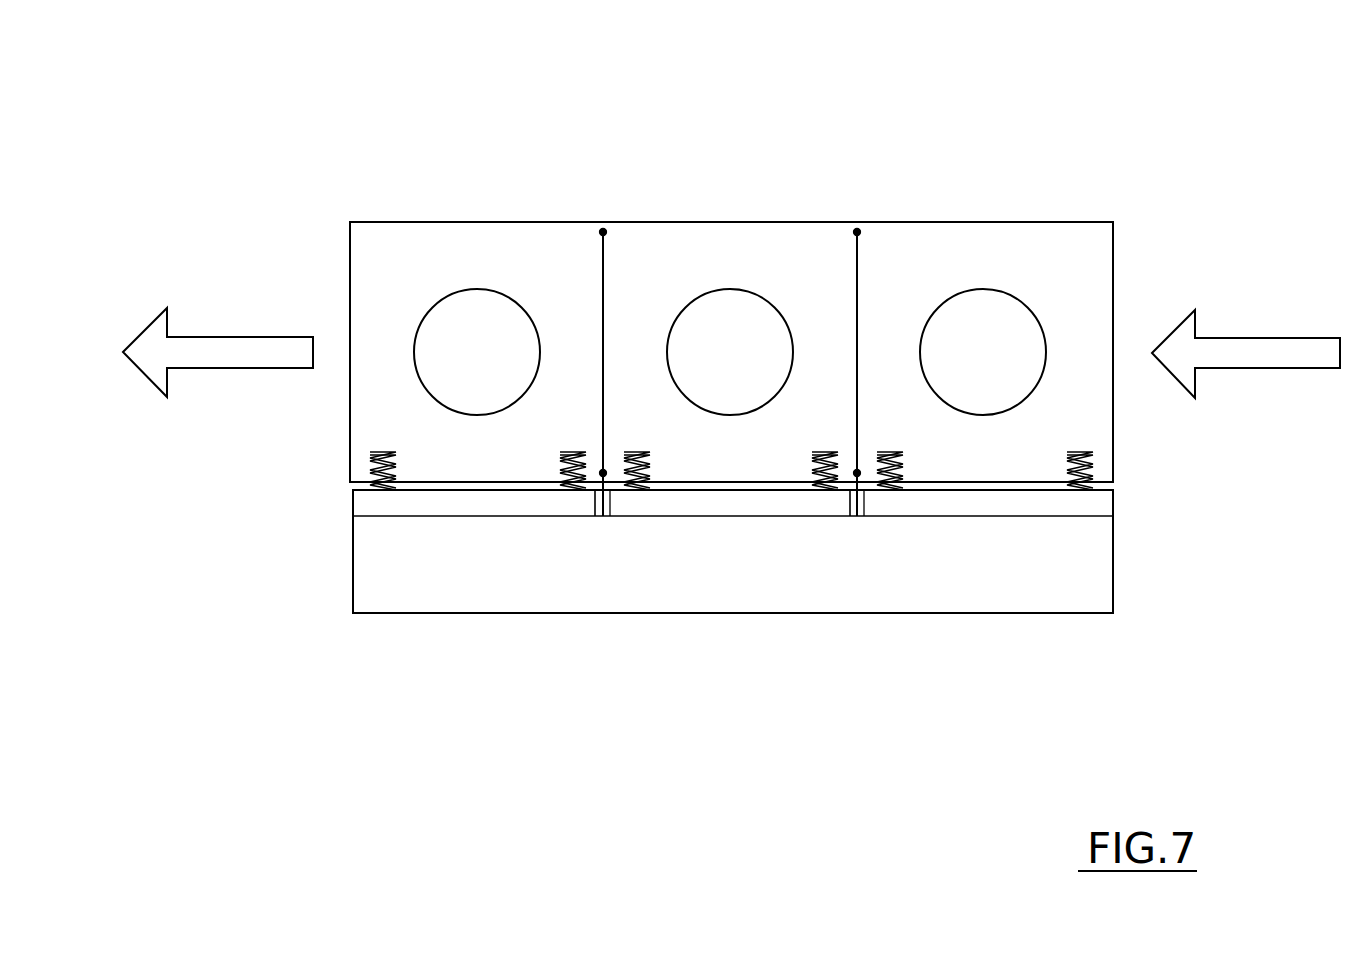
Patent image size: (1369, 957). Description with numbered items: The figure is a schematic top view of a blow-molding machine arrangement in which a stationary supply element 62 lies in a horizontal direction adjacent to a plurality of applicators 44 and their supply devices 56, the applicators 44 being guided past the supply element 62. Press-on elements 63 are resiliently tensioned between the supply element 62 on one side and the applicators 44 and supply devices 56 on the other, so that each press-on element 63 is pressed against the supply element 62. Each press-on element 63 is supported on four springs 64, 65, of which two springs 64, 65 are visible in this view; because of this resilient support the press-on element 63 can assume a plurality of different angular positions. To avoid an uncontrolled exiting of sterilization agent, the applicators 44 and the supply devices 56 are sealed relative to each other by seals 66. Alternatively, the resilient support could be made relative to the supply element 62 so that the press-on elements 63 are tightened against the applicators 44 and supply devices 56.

The applicator 44 is at (468, 176).
The supply device 56 is at (537, 242).
The supply element 62 is at (1088, 574).
The press-on element 63 is at (520, 505).
The spring 64 is at (1093, 470).
The spring 65 is at (893, 495).
The seal 66 is at (857, 232).